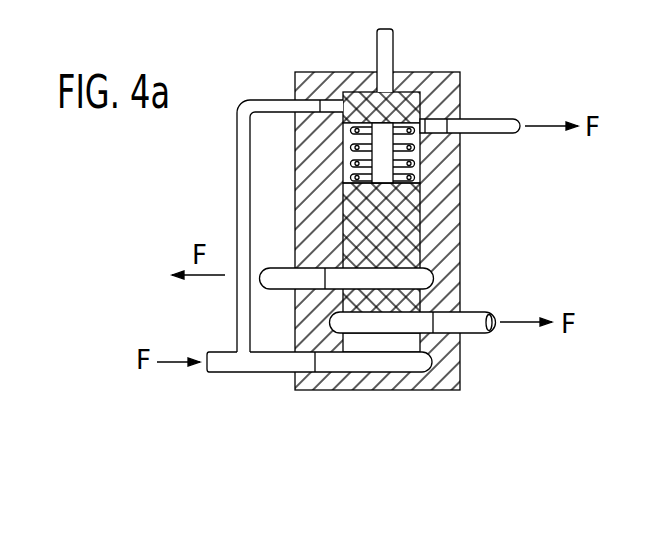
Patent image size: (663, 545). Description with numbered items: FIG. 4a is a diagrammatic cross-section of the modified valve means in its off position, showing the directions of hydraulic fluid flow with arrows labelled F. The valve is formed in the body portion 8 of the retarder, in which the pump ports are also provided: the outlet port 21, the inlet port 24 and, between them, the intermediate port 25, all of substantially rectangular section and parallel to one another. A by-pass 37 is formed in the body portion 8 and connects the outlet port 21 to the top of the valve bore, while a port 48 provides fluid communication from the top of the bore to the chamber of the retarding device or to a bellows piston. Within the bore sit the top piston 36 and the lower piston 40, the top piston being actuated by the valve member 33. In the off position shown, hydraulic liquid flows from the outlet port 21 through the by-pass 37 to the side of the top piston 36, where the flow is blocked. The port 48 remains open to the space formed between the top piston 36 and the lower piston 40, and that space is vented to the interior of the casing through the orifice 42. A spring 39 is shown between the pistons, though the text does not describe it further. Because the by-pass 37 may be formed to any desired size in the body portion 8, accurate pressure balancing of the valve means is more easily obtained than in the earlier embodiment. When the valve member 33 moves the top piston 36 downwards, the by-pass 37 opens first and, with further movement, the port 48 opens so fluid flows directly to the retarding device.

The body member 8 is at (465, 96).
The outlet port 21 is at (349, 356).
The inlet port 24 is at (413, 281).
The intermediate port 25 is at (420, 322).
The valve member 33 is at (386, 52).
The top piston 36 is at (360, 102).
The by-pass 37 is at (273, 102).
The spring 39 is at (425, 158).
The lower piston 40 is at (398, 258).
The orifice 42 is at (462, 180).
The port 48 is at (507, 118).